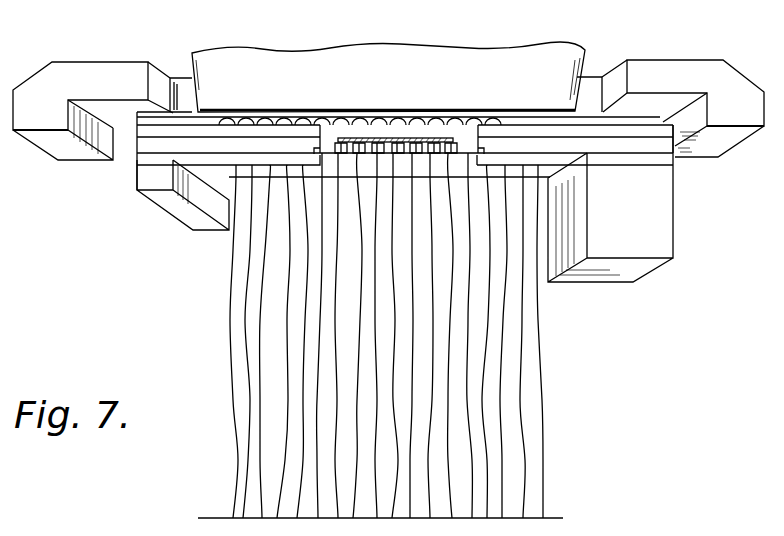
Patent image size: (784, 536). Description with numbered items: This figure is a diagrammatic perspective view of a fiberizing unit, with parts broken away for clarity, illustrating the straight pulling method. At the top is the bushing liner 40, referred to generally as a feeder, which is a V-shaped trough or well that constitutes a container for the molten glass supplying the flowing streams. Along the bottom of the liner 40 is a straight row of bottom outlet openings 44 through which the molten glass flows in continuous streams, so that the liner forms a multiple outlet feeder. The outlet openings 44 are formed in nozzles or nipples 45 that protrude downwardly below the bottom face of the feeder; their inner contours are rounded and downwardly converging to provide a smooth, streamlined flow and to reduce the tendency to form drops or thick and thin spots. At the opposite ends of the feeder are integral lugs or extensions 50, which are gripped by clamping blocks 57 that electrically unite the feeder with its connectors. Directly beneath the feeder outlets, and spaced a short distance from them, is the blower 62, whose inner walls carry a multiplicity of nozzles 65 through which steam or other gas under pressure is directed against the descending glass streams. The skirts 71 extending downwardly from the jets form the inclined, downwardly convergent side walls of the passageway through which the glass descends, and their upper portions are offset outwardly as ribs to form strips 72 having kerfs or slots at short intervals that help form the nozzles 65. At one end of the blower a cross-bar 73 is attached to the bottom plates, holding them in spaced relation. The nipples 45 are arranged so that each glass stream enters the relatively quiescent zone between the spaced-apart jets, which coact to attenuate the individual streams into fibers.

The bushing liner 40 is at (250, 60).
The bottom outlet openings 44 is at (356, 126).
The nozzles or nipples 45 is at (427, 123).
The lugs or extensions 50 is at (588, 76).
The clamping blocks 57 is at (82, 148).
The blower 62 is at (157, 143).
The nozzles 65 is at (368, 150).
The skirts 71 is at (672, 209).
The strips 72 is at (448, 152).
The cross-bar 73 is at (173, 205).